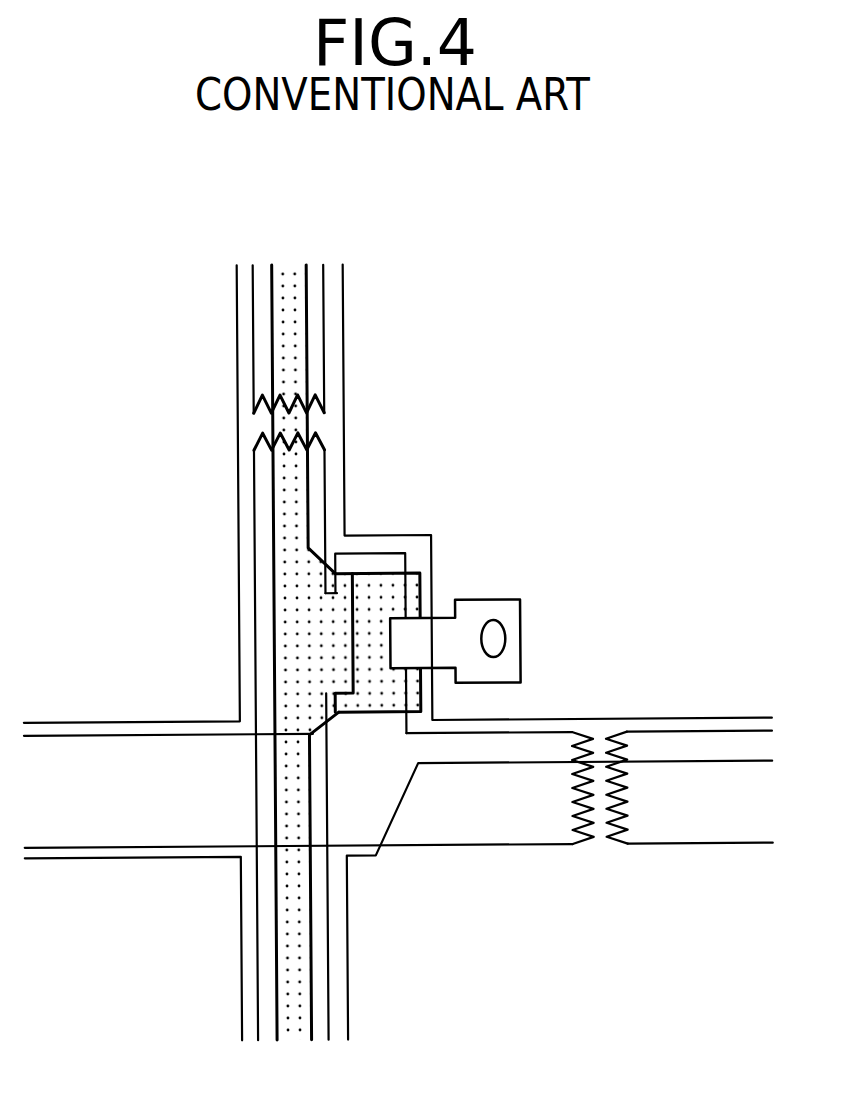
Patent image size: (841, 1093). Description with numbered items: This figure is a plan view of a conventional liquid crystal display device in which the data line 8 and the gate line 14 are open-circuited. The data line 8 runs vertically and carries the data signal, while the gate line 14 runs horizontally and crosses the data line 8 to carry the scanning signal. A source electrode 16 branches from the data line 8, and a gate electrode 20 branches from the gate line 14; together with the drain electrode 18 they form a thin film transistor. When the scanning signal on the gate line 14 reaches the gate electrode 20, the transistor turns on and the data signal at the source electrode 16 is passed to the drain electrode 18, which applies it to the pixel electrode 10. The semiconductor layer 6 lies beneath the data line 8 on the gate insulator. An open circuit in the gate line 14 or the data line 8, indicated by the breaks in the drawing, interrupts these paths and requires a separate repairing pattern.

The semiconductor layer 6 is at (275, 944).
The data line 8 is at (332, 1007).
The pixel electrode 10 is at (660, 508).
The gate line 14 is at (222, 742).
The source electrode 16 is at (363, 574).
The drain electrode 18 is at (505, 601).
The gate electrode 20 is at (405, 555).